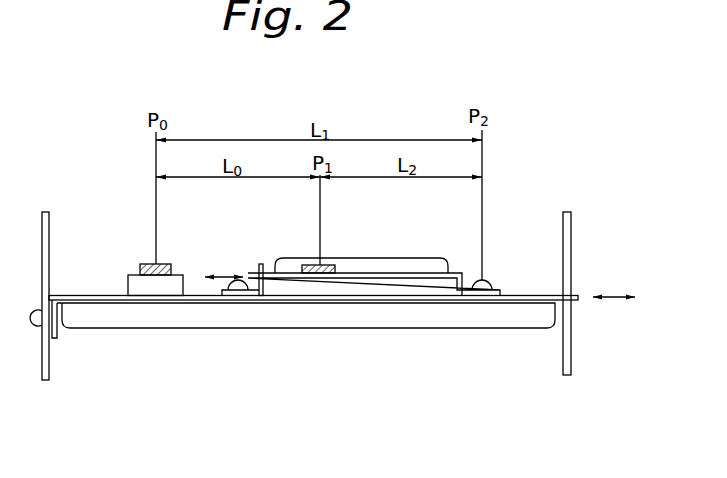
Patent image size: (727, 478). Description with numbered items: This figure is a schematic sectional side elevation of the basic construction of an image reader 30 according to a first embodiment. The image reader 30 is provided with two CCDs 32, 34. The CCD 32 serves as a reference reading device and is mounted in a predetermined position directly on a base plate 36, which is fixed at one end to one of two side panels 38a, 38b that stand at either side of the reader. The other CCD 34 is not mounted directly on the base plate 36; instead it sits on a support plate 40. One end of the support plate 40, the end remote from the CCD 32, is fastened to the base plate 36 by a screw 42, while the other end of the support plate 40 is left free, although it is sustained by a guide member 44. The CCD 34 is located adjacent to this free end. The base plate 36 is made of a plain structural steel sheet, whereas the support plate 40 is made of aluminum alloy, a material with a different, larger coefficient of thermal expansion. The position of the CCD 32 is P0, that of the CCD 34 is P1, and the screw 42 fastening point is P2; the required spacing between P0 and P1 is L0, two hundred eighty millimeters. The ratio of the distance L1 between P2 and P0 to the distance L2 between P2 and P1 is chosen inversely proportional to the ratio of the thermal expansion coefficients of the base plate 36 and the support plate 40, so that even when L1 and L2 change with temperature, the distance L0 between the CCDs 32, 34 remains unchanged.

The image reader 30 is at (547, 151).
The CCD 32 is at (148, 263).
The CCD 34 is at (328, 263).
The base plate 36 is at (88, 294).
The side panel 38a is at (49, 233).
The side panel 38b is at (571, 245).
The support plate 40 is at (410, 262).
The screw 42 is at (487, 280).
The guide member 44 is at (260, 263).